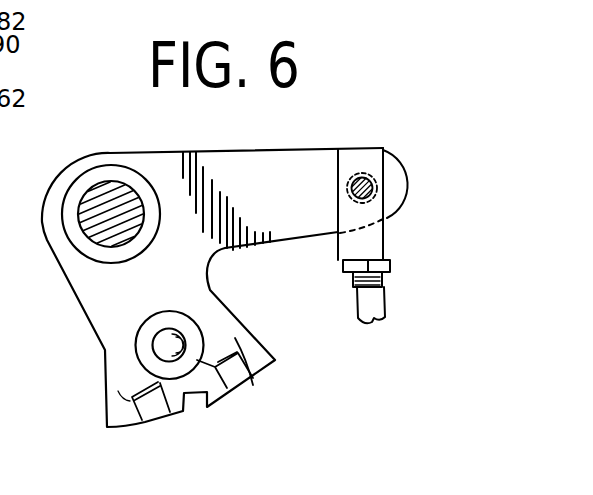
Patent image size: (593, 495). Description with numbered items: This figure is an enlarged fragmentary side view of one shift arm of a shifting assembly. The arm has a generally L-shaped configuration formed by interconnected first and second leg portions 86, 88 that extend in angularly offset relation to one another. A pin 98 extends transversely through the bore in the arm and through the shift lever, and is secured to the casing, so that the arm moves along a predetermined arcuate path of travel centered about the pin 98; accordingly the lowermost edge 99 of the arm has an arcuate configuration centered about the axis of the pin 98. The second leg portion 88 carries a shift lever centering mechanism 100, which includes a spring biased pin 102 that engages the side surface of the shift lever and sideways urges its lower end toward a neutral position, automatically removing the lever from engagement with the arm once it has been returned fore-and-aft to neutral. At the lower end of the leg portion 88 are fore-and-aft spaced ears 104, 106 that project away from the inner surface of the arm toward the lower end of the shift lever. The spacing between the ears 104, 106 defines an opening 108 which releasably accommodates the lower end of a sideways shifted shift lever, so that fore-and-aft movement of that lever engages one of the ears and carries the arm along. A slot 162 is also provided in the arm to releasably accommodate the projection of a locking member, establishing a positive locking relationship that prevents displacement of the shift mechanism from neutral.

The first leg portion 86 is at (278, 162).
The pin 98 is at (92, 223).
The shift lever centering mechanism 100 is at (143, 318).
The spring biased pin 102 is at (185, 337).
The second leg portion 88 is at (115, 405).
The edge 99 is at (125, 426).
The ear 104 is at (152, 412).
The opening 108 is at (178, 387).
The slot 162 is at (212, 394).
The ear 106 is at (238, 377).